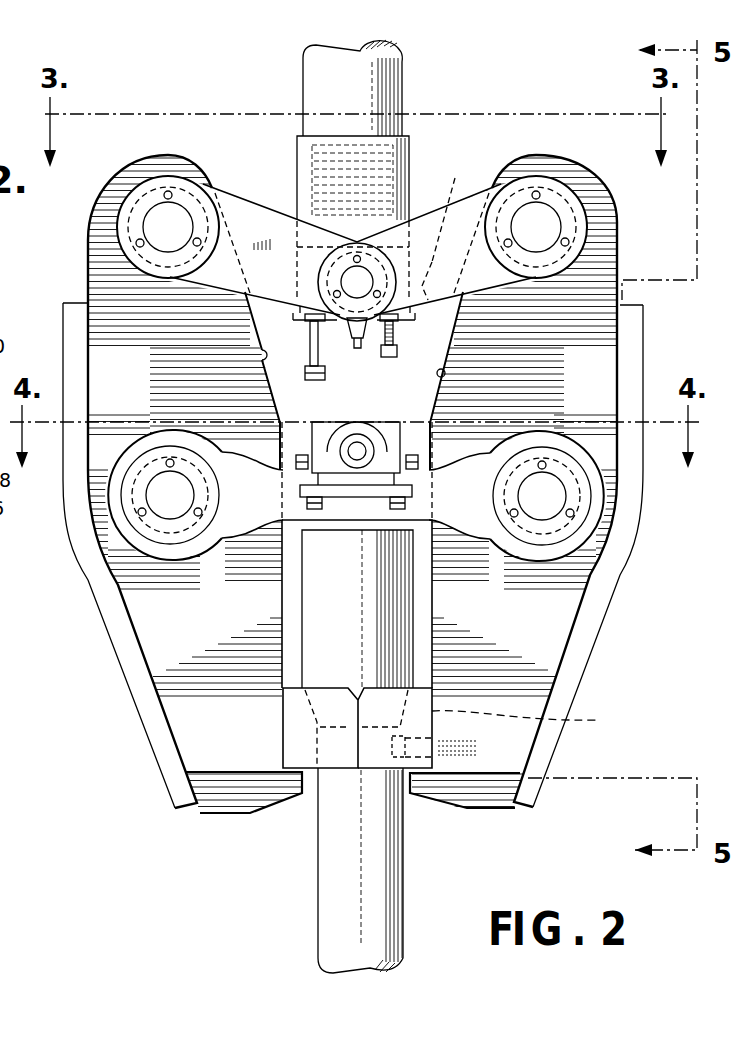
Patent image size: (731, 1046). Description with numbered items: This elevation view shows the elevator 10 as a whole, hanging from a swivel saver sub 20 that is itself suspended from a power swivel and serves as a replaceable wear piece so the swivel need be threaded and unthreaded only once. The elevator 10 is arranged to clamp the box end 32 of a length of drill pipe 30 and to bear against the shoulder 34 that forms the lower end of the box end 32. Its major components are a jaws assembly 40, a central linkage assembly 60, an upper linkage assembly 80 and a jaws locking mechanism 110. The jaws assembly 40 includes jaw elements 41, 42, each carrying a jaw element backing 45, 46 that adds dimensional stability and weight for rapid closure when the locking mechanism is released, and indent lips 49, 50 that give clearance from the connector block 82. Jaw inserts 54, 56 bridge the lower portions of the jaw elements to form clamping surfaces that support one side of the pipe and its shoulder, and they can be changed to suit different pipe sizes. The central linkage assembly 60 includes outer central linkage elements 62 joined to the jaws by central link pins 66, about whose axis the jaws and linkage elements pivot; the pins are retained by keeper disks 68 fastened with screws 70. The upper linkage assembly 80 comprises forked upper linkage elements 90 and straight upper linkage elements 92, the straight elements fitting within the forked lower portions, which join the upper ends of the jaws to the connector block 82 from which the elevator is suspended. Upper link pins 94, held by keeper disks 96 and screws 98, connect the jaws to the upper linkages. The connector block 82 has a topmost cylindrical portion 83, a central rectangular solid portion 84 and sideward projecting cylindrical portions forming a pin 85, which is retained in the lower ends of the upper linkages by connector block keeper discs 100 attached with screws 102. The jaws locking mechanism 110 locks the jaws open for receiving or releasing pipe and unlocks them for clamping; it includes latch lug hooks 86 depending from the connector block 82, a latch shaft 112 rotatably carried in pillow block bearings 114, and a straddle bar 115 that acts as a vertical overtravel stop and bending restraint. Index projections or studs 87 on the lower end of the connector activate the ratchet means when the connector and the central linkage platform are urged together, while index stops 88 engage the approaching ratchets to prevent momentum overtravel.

The elevator 10 is at (177, 830).
The swivel saver sub 20 is at (303, 78).
The drill pipe 30 is at (390, 932).
The box end 32 is at (389, 620).
The shoulder 34 is at (556, 720).
The jaws assembly 40 is at (379, 800).
The jaw element 41 is at (193, 735).
The jaw element 42 is at (519, 740).
The jaw element backing 45 is at (133, 677).
The jaw element backing 46 is at (588, 692).
The indent lip 49 is at (257, 355).
The indent lip 50 is at (446, 373).
The jaw insert 54 is at (337, 755).
The jaw insert 56 is at (426, 762).
The central linkage assembly 60 is at (524, 558).
The outer central linkage element 62 is at (263, 483).
The central link pin 66 is at (167, 510).
The keeper disk 68 is at (123, 508).
The screws 70 is at (560, 458).
The upper linkage assembly 80 is at (265, 152).
The connector block 82 is at (441, 216).
The topmost cylindrical portion 83 is at (409, 150).
The central rectangular solid portion 84 is at (418, 300).
The pin 85 is at (311, 324).
The latch lug hook 86 is at (357, 346).
The index projection 87 is at (310, 376).
The index stop 88 is at (395, 351).
The forked upper linkage element 90 is at (240, 210).
The straight upper linkage element 92 is at (478, 200).
The upper link pin 94 is at (168, 226).
The keeper disk 96 is at (133, 223).
The screws 98 is at (136, 244).
The connector block keeper disc 100 is at (340, 282).
The screws 102 is at (376, 283).
The jaws locking mechanism 110 is at (365, 414).
The latch shaft 112 is at (357, 456).
The pillow block bearings 114 is at (410, 478).
The straddle bar 115 is at (387, 430).